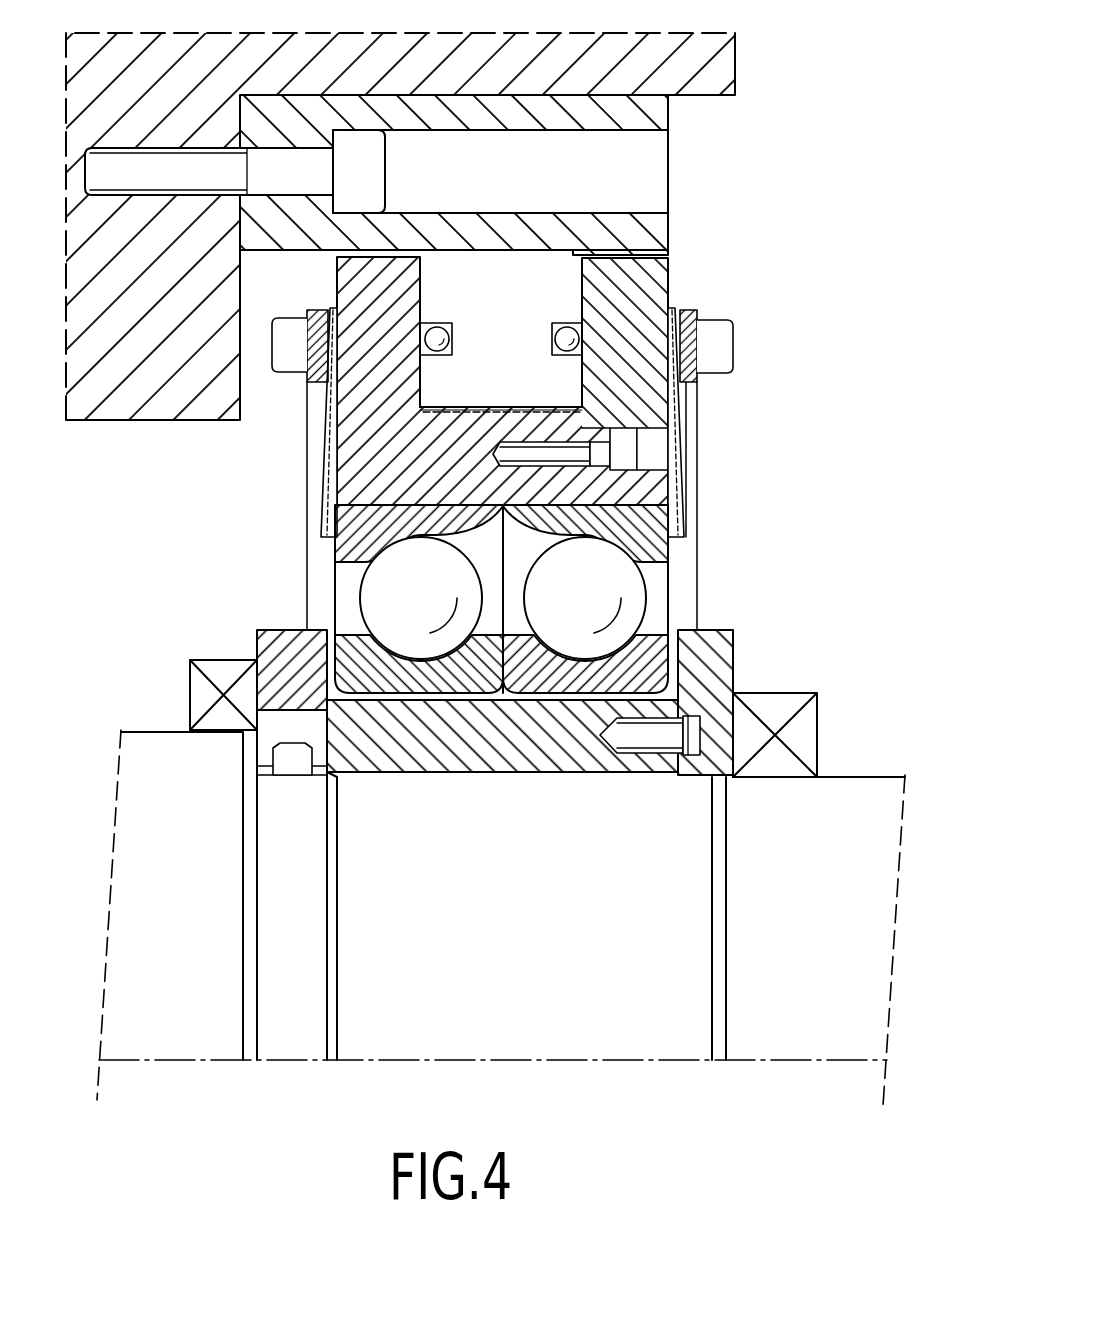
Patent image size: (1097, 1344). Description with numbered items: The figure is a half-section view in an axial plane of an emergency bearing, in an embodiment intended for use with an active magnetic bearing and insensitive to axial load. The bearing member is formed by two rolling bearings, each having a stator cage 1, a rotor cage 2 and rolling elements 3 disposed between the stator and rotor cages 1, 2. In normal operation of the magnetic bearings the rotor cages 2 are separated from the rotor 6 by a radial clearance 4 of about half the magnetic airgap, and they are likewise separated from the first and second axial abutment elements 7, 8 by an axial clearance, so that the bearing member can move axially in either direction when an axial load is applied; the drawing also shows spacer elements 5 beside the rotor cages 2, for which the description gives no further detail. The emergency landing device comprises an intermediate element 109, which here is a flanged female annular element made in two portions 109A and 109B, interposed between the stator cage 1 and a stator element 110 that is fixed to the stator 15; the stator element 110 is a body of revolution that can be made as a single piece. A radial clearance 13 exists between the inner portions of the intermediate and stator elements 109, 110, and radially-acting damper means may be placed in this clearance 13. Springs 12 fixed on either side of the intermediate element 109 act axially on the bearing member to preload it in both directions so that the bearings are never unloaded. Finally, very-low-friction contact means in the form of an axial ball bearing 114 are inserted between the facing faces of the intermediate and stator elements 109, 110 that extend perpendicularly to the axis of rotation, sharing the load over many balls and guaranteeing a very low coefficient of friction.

The stator cage 1 is at (648, 495).
The rotor cage 2 is at (642, 660).
The rolling elements 3 is at (608, 575).
The radial clearance 4 is at (553, 696).
The spacer ring 5 is at (282, 668).
The rotor 6 is at (878, 930).
The first axial abutment element 7 is at (740, 717).
The second axial abutment element 8 is at (255, 646).
The springs 12 is at (322, 473).
The radial clearance 13 is at (458, 414).
The stator 15 is at (738, 60).
The intermediate element 109 is at (512, 365).
The first portion of intermediate element 109A is at (364, 289).
The second portion of intermediate element 109B is at (632, 284).
The stator element 110 is at (657, 233).
The axial ball bearing 114 is at (578, 330).